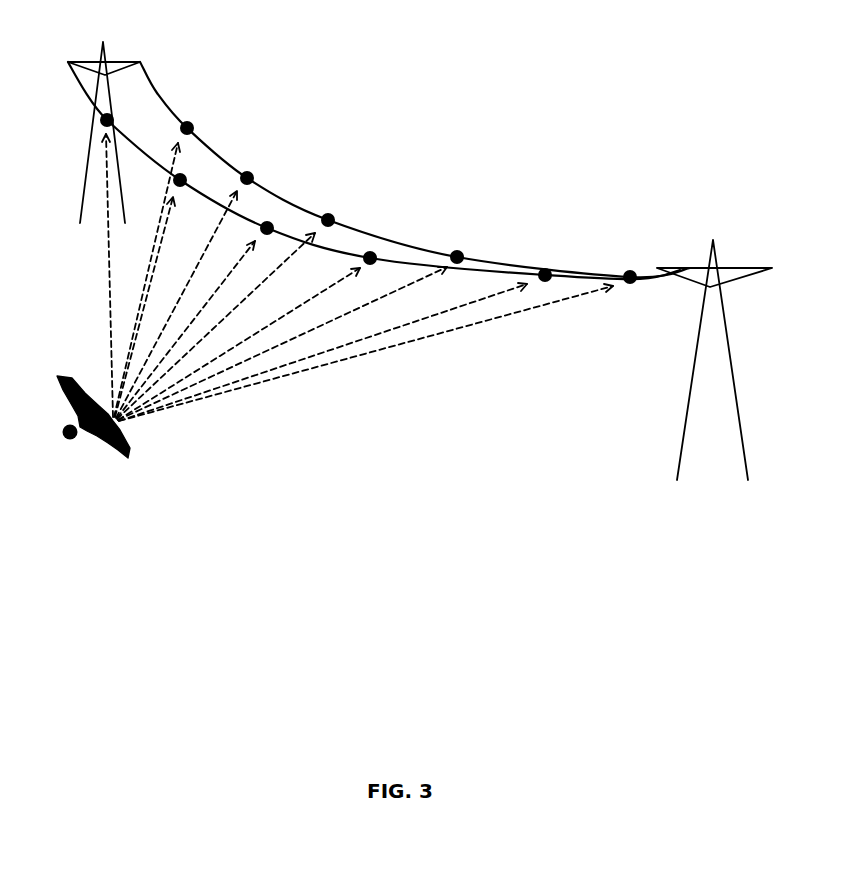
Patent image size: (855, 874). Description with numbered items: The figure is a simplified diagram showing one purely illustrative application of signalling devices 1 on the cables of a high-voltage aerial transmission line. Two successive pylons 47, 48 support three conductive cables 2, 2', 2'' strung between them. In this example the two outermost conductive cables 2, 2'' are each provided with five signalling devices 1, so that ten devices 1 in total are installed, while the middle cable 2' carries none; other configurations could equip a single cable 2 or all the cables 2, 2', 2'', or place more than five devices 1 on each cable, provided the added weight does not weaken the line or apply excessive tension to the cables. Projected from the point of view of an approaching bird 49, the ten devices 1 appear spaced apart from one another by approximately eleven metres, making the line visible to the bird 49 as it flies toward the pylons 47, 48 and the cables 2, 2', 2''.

The signalling device 1 is at (107, 120).
The conductive cable 2 is at (374, 250).
The conductive cable 2' is at (298, 240).
The conductive cable 2'' is at (556, 320).
The pylon 47 is at (92, 58).
The pylon 48 is at (689, 362).
The bird 49 is at (86, 453).